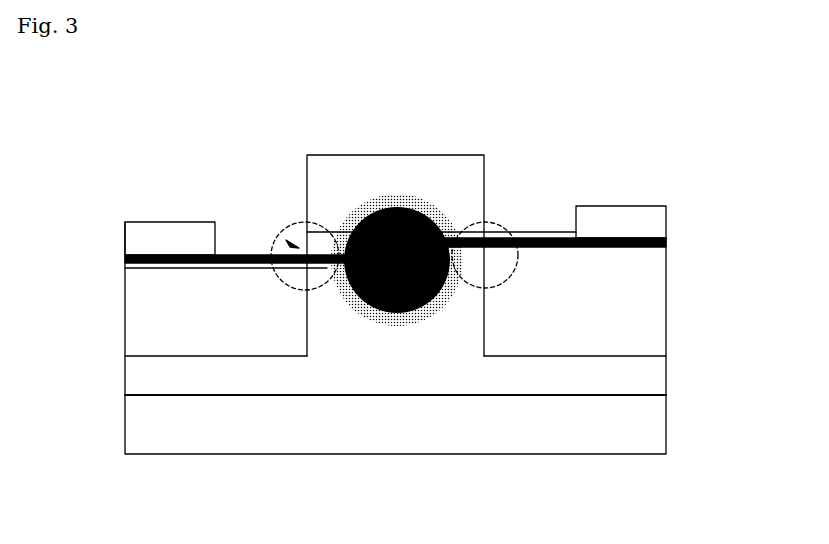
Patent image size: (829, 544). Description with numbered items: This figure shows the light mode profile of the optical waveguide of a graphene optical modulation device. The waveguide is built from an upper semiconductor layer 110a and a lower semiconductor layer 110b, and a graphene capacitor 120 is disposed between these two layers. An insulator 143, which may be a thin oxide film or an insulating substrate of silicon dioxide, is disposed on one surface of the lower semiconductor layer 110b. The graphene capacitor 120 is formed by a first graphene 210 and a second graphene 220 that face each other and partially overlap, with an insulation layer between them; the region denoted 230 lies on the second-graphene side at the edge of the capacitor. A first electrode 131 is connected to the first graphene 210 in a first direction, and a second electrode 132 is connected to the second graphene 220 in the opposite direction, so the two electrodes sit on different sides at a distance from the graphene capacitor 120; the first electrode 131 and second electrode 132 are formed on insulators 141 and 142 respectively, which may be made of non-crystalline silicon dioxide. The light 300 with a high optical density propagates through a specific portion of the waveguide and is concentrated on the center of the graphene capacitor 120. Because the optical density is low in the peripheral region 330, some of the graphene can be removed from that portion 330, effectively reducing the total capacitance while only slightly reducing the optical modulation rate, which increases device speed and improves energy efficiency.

The upper semiconductor layer 110a is at (461, 177).
The lower semiconductor layer 110b is at (643, 378).
The graphene capacitor 120 is at (297, 246).
The first electrode 131 is at (653, 218).
The second electrode 132 is at (140, 238).
The insulator 141 is at (643, 308).
The insulator 142 is at (140, 310).
The insulator 143 is at (643, 428).
The first graphene 210 is at (476, 224).
The second graphene 220 is at (233, 257).
The second junction region 230 is at (318, 243).
The light 300 is at (398, 207).
The peripheral region 330 is at (472, 293).